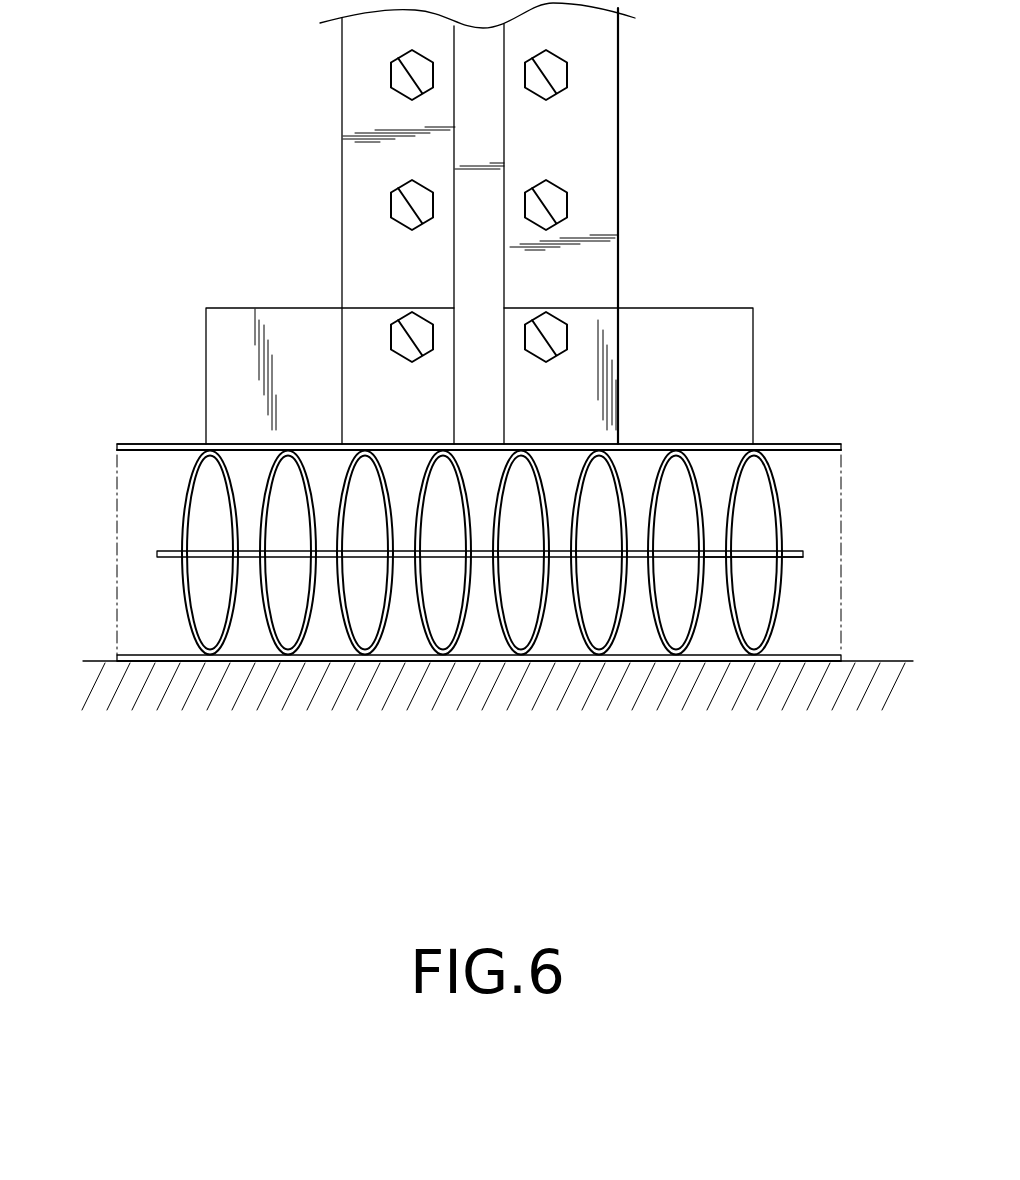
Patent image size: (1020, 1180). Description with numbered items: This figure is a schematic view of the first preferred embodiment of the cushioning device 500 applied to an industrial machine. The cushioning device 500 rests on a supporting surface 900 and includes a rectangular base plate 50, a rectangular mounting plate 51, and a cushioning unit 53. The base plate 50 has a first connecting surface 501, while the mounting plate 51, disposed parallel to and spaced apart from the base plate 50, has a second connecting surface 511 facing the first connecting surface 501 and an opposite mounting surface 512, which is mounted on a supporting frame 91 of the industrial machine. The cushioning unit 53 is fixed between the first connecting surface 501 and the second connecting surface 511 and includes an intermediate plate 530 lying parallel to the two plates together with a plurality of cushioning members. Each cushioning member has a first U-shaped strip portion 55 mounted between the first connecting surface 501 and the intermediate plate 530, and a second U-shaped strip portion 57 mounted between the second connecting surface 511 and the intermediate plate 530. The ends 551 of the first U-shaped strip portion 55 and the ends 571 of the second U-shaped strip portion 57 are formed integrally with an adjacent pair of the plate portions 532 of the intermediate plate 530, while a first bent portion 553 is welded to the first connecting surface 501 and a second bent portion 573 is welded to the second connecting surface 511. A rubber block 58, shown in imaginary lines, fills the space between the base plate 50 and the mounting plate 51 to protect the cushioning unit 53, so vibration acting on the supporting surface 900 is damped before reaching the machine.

The supporting frame 91 is at (333, 347).
The cushioning device 500 is at (820, 424).
The mounting plate 51 is at (443, 429).
The mounting surface 512 is at (153, 444).
The second connecting surface 511 is at (130, 452).
The cushioning unit 53 is at (808, 522).
The second U-shaped strip portion 57 is at (772, 497).
The ends of second U-shaped strip portion 571 is at (237, 543).
The second bent portion 573 is at (677, 447).
The ends of first U-shaped strip portion 551 is at (417, 562).
The first bent portion 553 is at (677, 655).
The intermediate plate 530 is at (803, 553).
The plate portions 532 is at (783, 557).
The first U-shaped strip portion 55 is at (777, 607).
The first connecting surface 501 is at (808, 657).
The rubber block 58 is at (115, 535).
The supporting surface 900 is at (110, 660).
The base plate 50 is at (795, 661).